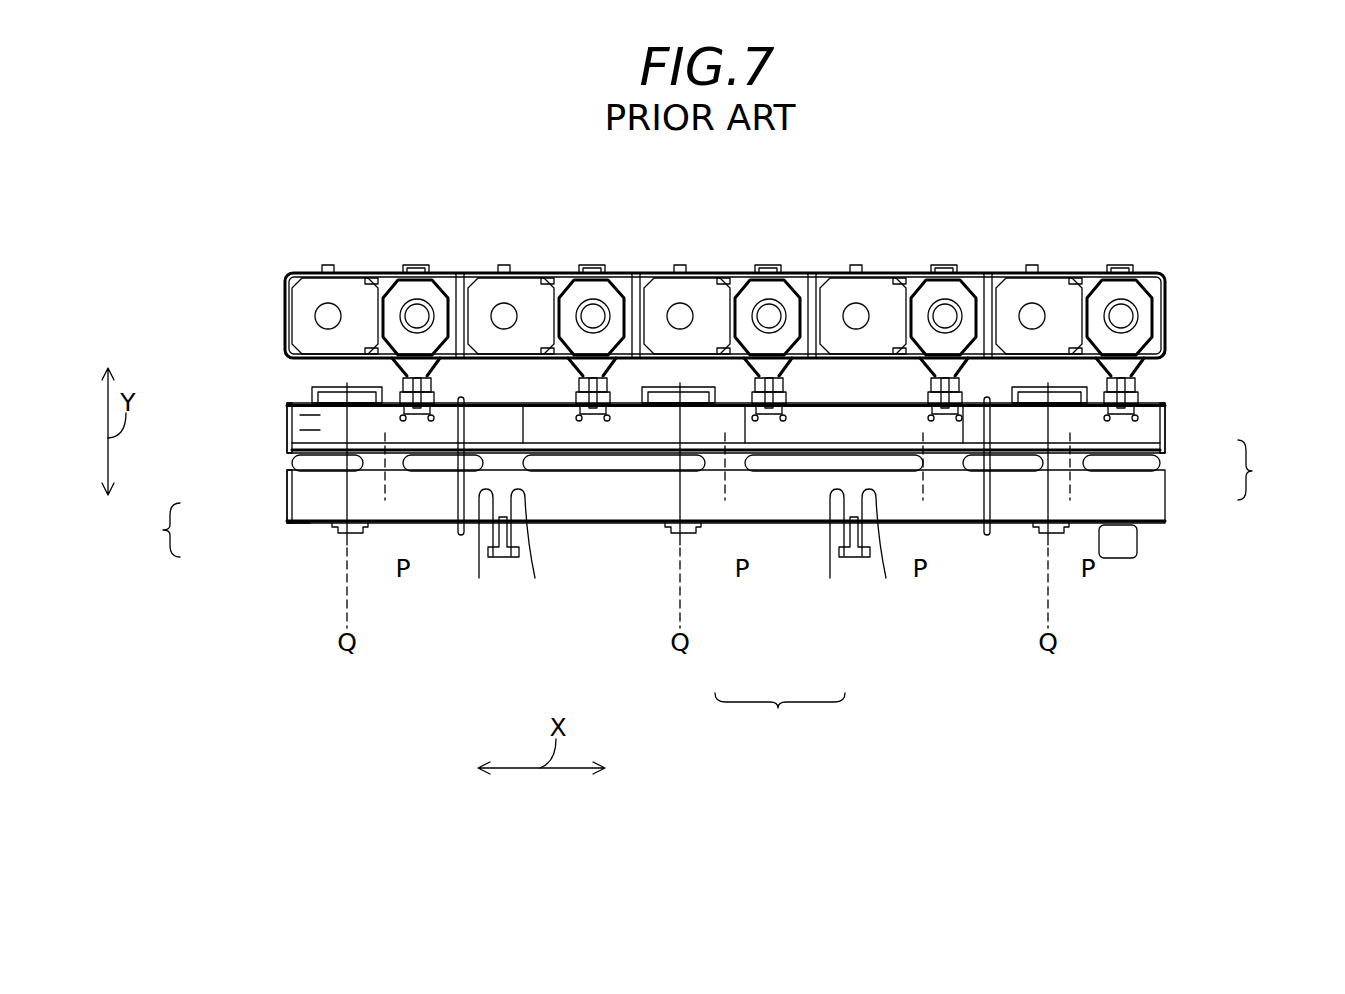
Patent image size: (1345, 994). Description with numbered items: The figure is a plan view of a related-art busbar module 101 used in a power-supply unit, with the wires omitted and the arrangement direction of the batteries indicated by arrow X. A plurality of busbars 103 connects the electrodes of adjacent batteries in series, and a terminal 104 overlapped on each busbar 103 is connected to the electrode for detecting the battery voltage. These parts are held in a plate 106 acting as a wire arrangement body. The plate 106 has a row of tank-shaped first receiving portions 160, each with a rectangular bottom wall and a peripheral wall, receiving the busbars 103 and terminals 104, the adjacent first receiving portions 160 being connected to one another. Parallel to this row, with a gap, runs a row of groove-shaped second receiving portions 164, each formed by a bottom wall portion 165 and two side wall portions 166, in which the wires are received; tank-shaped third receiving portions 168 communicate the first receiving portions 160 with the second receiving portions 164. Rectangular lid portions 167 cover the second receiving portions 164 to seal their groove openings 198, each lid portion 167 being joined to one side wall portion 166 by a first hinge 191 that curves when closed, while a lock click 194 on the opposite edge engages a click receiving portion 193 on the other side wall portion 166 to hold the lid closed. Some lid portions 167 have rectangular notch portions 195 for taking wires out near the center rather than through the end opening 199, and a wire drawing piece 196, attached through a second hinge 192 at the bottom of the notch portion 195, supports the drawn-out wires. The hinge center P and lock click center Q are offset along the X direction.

The busbar module 101 is at (1027, 162).
The busbar 103 is at (329, 272).
The terminal 104 is at (416, 272).
The plate 106 is at (1162, 268).
The first receiving portion 160 is at (350, 274).
The second receiving portion 164 is at (705, 590).
The bottom wall portion 165 is at (292, 462).
The side wall portion 166 is at (292, 478).
The lid portion 167 is at (298, 526).
The third receiving portion 168 is at (433, 384).
The first hinge 191 is at (392, 458).
The second hinge 192 is at (521, 540).
The click receiving portion 193 is at (318, 388).
The lock click 194 is at (352, 535).
The notch portion 195 is at (485, 540).
The wire drawing piece 196 is at (501, 558).
The groove opening 198 is at (372, 395).
The end opening 199 is at (292, 425).